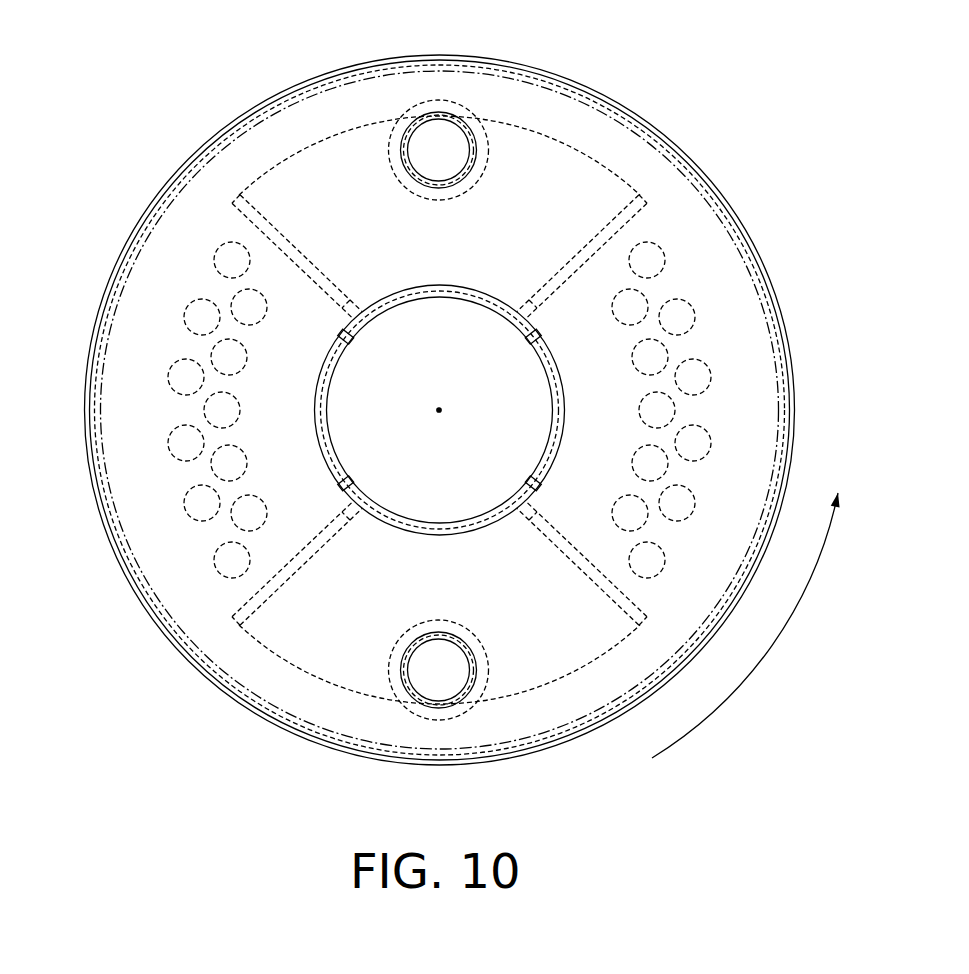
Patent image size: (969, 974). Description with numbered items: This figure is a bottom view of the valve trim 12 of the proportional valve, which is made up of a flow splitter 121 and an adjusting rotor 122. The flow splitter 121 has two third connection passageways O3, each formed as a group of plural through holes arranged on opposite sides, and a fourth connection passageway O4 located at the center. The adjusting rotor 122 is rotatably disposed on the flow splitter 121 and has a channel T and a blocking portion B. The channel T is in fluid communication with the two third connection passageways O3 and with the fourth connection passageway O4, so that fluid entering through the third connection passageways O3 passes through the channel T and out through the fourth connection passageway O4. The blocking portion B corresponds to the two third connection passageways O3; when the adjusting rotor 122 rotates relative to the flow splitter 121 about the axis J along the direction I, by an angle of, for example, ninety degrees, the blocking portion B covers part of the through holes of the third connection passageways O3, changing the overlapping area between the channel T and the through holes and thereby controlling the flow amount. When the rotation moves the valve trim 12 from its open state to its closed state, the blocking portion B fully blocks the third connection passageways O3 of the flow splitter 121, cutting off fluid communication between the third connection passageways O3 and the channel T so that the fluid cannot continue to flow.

The valve trim 12 is at (60, 44).
The flow splitter 121 is at (786, 353).
The adjusting rotor 122 is at (753, 283).
The blocking portion B is at (156, 350).
The channel T is at (453, 252).
The fourth connection passageway O4 is at (418, 363).
The axis J is at (447, 412).
The third connection passageway O3 is at (222, 254).
The direction I is at (745, 625).